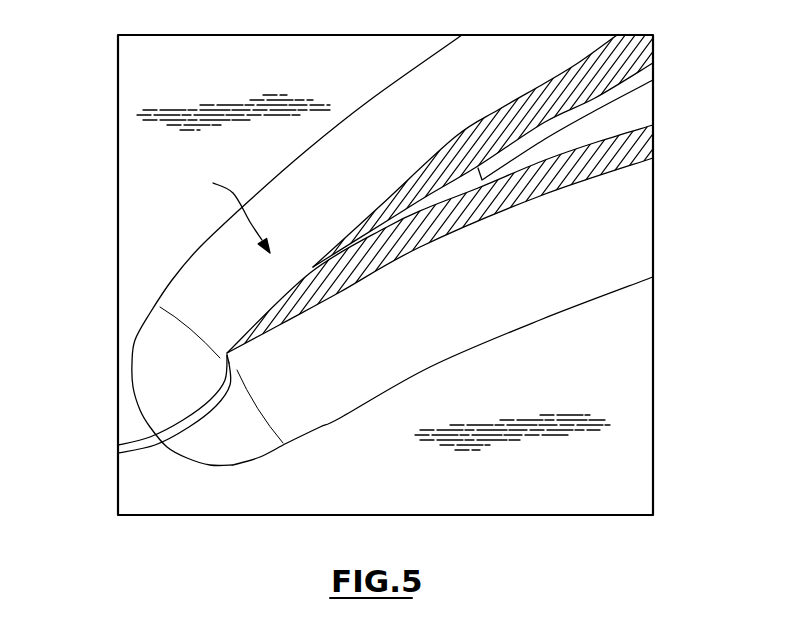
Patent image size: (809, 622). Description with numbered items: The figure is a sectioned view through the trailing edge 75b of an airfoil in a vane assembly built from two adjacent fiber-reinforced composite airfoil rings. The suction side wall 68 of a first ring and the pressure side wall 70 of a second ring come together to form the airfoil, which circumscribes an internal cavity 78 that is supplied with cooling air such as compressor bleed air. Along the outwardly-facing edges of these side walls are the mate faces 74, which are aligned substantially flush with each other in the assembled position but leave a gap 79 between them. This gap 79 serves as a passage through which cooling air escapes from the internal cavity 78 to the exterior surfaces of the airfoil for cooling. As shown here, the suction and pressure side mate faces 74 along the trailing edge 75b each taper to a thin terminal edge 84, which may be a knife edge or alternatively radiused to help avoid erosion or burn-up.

The suction side wall 68 is at (597, 331).
The pressure side wall 70 is at (328, 73).
The mate faces 74 is at (431, 190).
The trailing edge 75b is at (217, 213).
The internal cavity 78 is at (647, 119).
The gap 79 is at (150, 442).
The terminal edge 84 is at (313, 268).